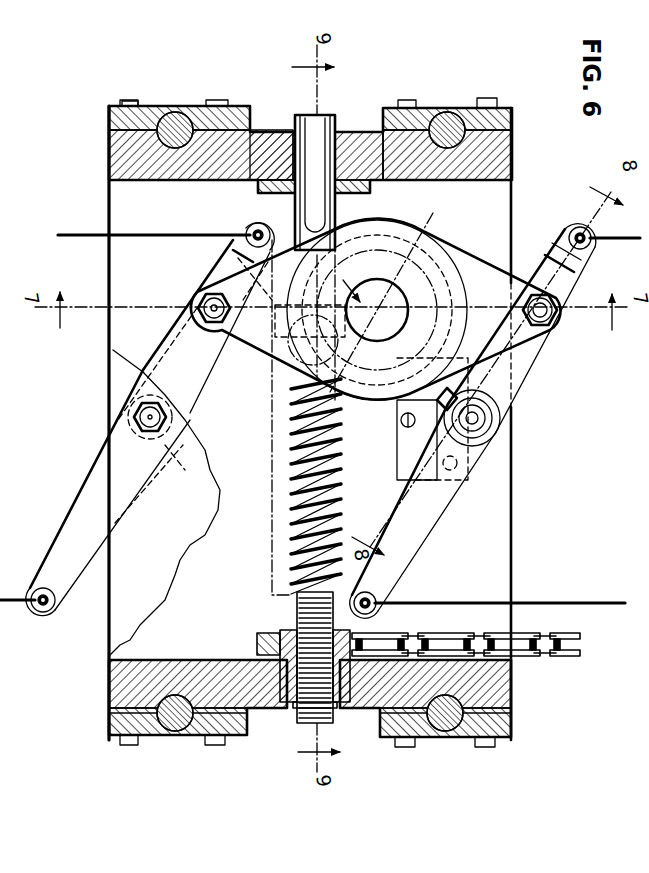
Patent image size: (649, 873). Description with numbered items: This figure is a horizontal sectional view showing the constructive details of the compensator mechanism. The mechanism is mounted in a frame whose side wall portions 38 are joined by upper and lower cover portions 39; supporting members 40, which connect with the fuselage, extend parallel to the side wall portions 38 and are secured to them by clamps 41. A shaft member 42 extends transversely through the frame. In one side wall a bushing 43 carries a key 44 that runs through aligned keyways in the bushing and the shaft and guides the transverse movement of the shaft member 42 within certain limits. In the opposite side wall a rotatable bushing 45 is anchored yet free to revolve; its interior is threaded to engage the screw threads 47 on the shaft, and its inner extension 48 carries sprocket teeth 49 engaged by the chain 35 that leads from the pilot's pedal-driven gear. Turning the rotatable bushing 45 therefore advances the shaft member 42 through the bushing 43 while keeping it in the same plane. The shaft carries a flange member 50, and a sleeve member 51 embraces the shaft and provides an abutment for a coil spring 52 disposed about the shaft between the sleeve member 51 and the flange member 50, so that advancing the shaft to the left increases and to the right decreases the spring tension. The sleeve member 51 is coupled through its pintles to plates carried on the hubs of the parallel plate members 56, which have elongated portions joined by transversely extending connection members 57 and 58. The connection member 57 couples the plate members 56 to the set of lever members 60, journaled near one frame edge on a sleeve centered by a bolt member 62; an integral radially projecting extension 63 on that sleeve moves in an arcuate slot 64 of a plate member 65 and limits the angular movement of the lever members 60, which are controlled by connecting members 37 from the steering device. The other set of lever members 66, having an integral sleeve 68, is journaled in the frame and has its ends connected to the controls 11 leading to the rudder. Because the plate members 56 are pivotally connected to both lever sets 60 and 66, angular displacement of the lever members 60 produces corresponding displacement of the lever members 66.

The controls 11 is at (92, 231).
The chain 35 is at (570, 658).
The connecting members 37 is at (626, 241).
The side wall portions 38 is at (512, 145).
The cover portions 39 is at (505, 525).
The supporting members 40 is at (177, 118).
The clamps 41 is at (130, 110).
The shaft member 42 is at (333, 202).
The bushing 43 is at (292, 135).
The key 44 is at (322, 127).
The rotatable bushing 45 is at (287, 680).
The screw threads 47 is at (336, 712).
The inner extension 48 is at (290, 640).
The sprocket teeth 49 is at (257, 633).
The flange member 50 is at (282, 578).
The sleeve member 51 is at (207, 286).
The coil spring 52 is at (357, 437).
The parallel plate members 56 is at (478, 264).
The transversely extending connection member 57 is at (560, 345).
The transversely extending connection member 58 is at (215, 315).
The lever members 60 is at (440, 503).
The bolt member 62 is at (498, 430).
The radially projecting extension 63 is at (500, 412).
The arcuate slot 64 is at (468, 440).
The plate member 65 is at (398, 463).
The lever members 66 is at (72, 518).
The sleeve 68 is at (125, 428).